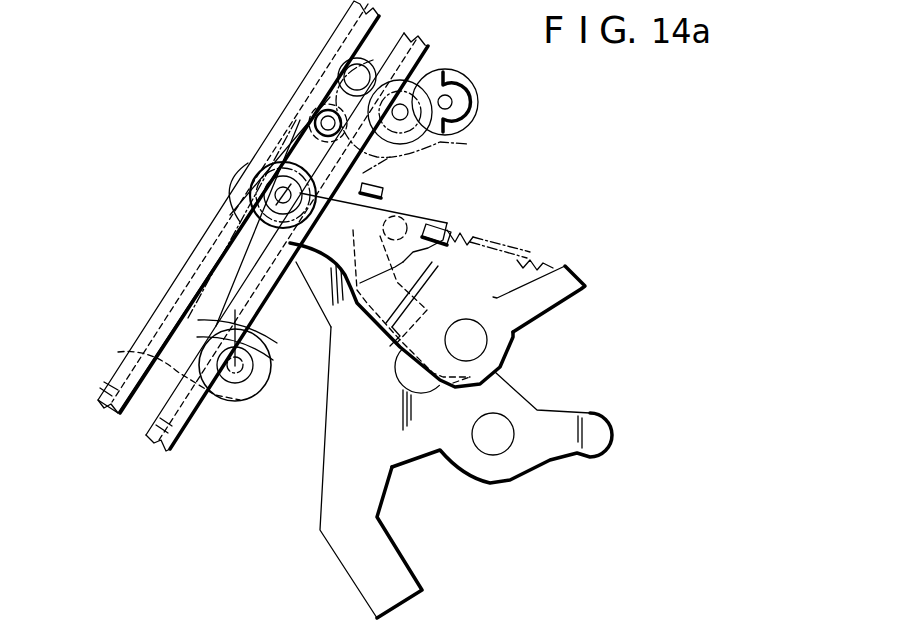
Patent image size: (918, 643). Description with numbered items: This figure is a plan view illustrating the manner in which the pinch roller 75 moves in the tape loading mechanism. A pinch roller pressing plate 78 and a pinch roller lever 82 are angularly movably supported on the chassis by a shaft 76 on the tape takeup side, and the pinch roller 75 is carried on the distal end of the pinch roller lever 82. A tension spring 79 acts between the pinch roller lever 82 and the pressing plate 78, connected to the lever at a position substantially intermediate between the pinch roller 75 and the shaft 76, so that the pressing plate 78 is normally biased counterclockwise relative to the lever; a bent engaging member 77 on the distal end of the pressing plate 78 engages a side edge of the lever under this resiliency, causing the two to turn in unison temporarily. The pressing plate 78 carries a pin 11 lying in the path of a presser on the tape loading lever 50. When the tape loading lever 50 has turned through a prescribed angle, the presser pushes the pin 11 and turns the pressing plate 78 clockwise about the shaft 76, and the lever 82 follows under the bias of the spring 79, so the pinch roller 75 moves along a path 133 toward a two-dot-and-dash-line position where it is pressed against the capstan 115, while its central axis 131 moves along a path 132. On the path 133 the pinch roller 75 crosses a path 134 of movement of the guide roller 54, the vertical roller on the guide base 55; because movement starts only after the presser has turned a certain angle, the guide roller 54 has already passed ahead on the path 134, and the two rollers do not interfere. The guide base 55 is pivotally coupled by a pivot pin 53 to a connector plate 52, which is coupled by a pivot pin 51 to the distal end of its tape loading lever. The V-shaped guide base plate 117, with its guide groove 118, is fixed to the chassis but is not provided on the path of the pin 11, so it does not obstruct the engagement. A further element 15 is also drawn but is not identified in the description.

The pressing pin 11 is at (400, 299).
The lever 15 is at (505, 440).
The tape loading lever 50 is at (363, 502).
The pivot pin 51 is at (262, 186).
The connector plate 52 is at (283, 140).
The pivot pin 53 is at (328, 123).
The guide roller 54 is at (357, 77).
The guide base 55 is at (322, 82).
The pinch roller 75 is at (400, 114).
The shaft 76 is at (477, 343).
The bent engaging member 77 is at (384, 190).
The pinch roller pressing plate 78 is at (548, 297).
The tension spring 79 is at (535, 262).
The pinch roller lever 82 is at (439, 226).
The capstan 115 is at (453, 100).
The guide base plate 117 is at (395, 53).
The guide groove 118 is at (385, 37).
The central axis 131 is at (416, 108).
The path 132 is at (238, 314).
The path 133 is at (263, 346).
The path 134 is at (135, 352).